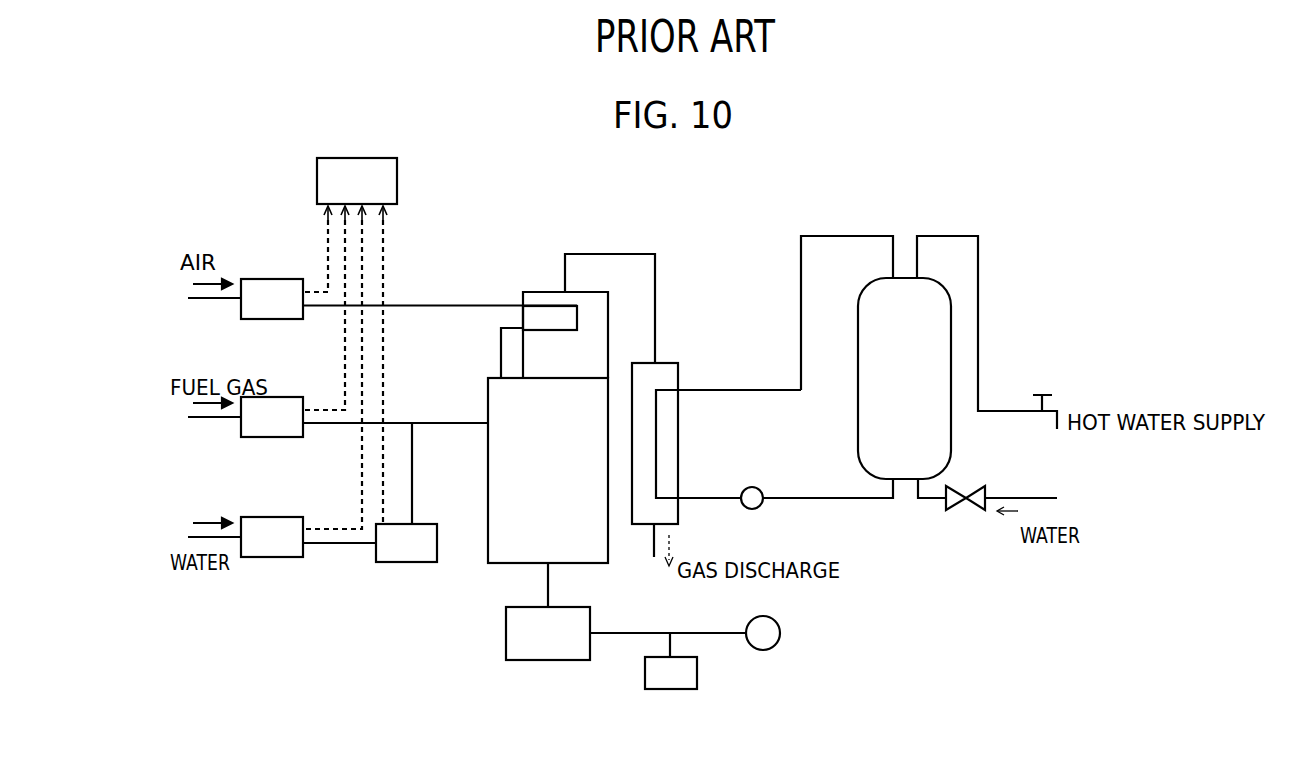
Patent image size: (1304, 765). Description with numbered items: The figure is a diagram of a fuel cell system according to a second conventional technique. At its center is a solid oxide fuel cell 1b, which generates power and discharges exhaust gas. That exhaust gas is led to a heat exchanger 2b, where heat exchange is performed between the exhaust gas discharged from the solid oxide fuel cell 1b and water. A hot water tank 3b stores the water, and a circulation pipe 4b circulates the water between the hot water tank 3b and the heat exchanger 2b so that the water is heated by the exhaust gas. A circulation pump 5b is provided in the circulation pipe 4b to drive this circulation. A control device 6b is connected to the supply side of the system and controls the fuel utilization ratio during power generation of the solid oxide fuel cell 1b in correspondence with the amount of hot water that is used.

The solid oxide fuel cell 1b is at (578, 563).
The heat exchanger 2b is at (664, 363).
The hot water tank 3b is at (868, 289).
The circulation pipe 4b is at (808, 498).
The circulation pump 5b is at (756, 487).
The control device 6b is at (382, 158).